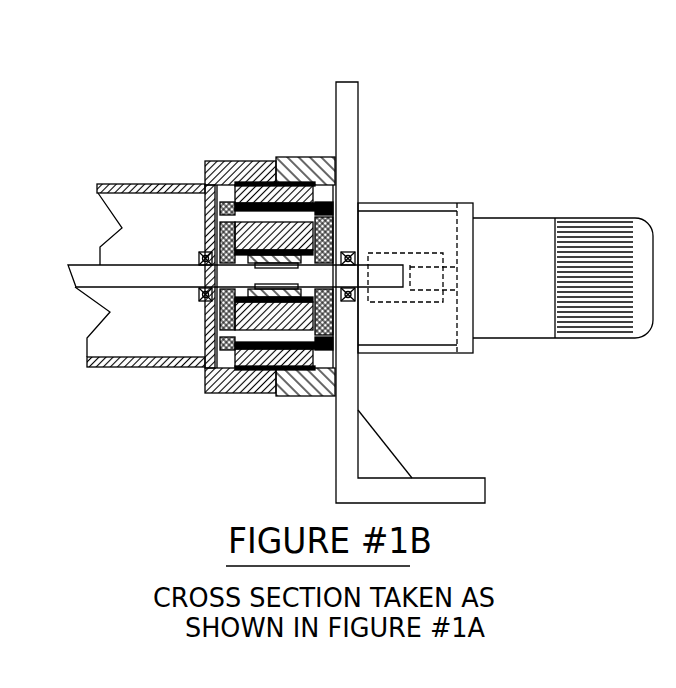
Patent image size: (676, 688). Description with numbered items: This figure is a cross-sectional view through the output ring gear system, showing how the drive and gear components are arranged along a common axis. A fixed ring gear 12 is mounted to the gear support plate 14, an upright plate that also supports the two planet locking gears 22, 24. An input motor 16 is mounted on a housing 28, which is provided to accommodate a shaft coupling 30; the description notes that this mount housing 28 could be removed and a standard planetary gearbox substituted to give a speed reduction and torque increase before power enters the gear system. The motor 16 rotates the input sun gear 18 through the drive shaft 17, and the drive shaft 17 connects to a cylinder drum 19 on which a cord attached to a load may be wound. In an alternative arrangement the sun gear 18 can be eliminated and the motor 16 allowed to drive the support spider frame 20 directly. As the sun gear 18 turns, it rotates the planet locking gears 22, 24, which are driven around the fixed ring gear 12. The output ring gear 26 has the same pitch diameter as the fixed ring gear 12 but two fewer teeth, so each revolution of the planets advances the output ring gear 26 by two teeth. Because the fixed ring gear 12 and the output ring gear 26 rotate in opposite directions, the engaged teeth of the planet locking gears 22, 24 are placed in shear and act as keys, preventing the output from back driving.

The fixed ring gear 12 is at (313, 157).
The gear support plate 14 is at (347, 100).
The input motor 16 is at (502, 225).
The drive shaft 17 is at (192, 272).
The input sun gear 18 is at (330, 242).
The cylinder drum 19 is at (108, 367).
The support spider frame 20 is at (330, 203).
The planet locking gear 22 is at (240, 358).
The planet locking gear 24 is at (240, 193).
The output ring gear 26 is at (232, 162).
The housing 28 is at (440, 338).
The shaft coupling 30 is at (408, 293).